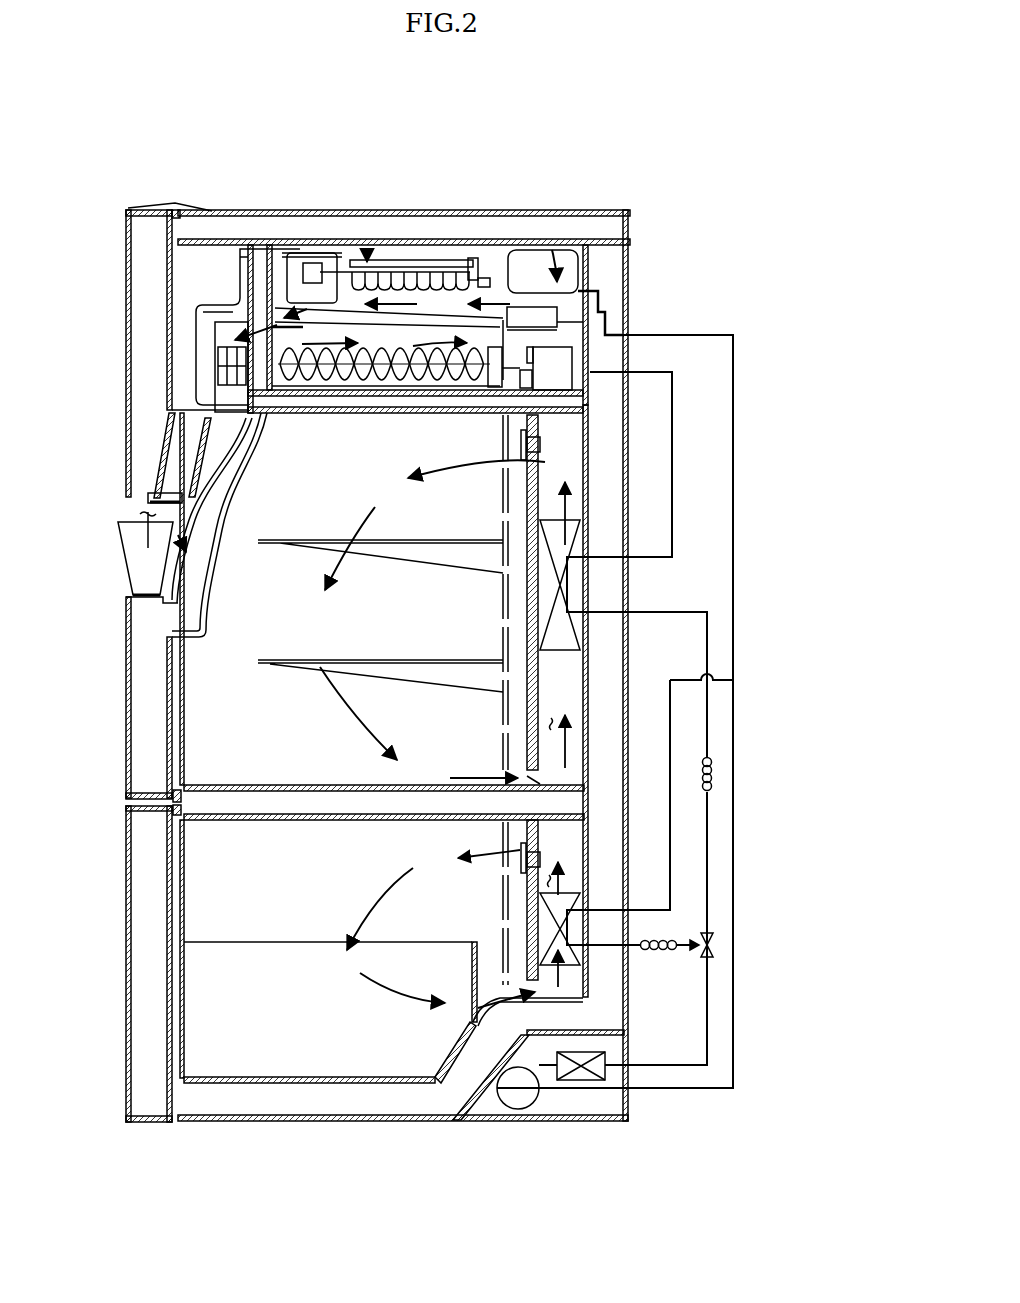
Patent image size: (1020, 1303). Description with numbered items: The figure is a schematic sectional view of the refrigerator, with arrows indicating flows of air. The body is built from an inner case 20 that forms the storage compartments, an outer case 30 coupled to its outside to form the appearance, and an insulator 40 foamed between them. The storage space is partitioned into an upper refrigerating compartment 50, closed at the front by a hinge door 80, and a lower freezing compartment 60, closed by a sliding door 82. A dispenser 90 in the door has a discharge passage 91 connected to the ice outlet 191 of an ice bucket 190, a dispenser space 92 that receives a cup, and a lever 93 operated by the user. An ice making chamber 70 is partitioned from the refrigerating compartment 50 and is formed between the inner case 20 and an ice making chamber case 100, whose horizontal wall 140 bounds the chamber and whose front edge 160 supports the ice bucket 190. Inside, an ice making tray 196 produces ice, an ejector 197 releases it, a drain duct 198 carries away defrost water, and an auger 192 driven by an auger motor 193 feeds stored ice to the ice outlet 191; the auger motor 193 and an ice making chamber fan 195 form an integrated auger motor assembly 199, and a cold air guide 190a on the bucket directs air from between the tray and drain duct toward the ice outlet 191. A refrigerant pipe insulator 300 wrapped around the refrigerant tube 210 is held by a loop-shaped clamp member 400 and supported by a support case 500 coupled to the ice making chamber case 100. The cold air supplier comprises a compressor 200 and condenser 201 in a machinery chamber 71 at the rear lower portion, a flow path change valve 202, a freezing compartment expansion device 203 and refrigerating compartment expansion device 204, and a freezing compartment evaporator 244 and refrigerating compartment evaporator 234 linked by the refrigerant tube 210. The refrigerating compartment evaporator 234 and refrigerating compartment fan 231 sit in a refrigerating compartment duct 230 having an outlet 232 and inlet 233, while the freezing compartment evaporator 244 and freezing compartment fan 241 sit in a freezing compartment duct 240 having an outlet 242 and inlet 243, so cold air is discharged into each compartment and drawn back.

The inner case 20 is at (590, 247).
The outer case 30 is at (632, 272).
The insulator 40 is at (610, 262).
The refrigerating compartment 50 is at (386, 614).
The freezing compartment 60 is at (298, 889).
The ice making chamber 70 is at (393, 346).
The machinery chamber 71 is at (478, 1108).
The hinge door 80 is at (126, 212).
The sliding door 82 is at (126, 905).
The dispenser 90 is at (143, 497).
The discharge passage 91 is at (182, 457).
The dispenser space 92 is at (143, 548).
The lever 93 is at (187, 547).
The ice making chamber case 100 is at (415, 262).
The horizontal wall 140 is at (415, 329).
The front edge 160 is at (242, 222).
The ice bucket 190 is at (258, 220).
The cold air guide 190a is at (225, 347).
The ice outlet 191 is at (235, 398).
The auger 192 is at (347, 222).
The auger motor 193 is at (563, 382).
The ice making chamber fan 195 is at (560, 332).
The ice making tray 196 is at (377, 222).
The ejector 197 is at (438, 222).
The drain duct 198 is at (503, 222).
The auger motor assembly 199 is at (603, 335).
The compressor 200 is at (512, 1105).
The condenser 201 is at (583, 1082).
The flow path change valve 202 is at (716, 942).
The freezing compartment expansion device 203 is at (660, 935).
The refrigerating compartment expansion device 204 is at (712, 772).
The refrigerant tube 210 is at (752, 888).
The refrigerating compartment duct 230 is at (553, 718).
The refrigerating compartment fan 231 is at (533, 453).
The refrigerating compartment outlet 232 is at (523, 443).
The refrigerating compartment inlet 233 is at (537, 780).
The refrigerating compartment evaporator 234 is at (547, 583).
The freezing compartment duct 240 is at (527, 878).
The freezing compartment fan 241 is at (533, 847).
The freezing compartment outlet 242 is at (527, 840).
The freezing compartment inlet 243 is at (527, 968).
The freezing compartment evaporator 244 is at (548, 928).
The refrigerant pipe insulator 300 is at (552, 250).
The clamp member 400 is at (510, 252).
The support case 500 is at (583, 243).